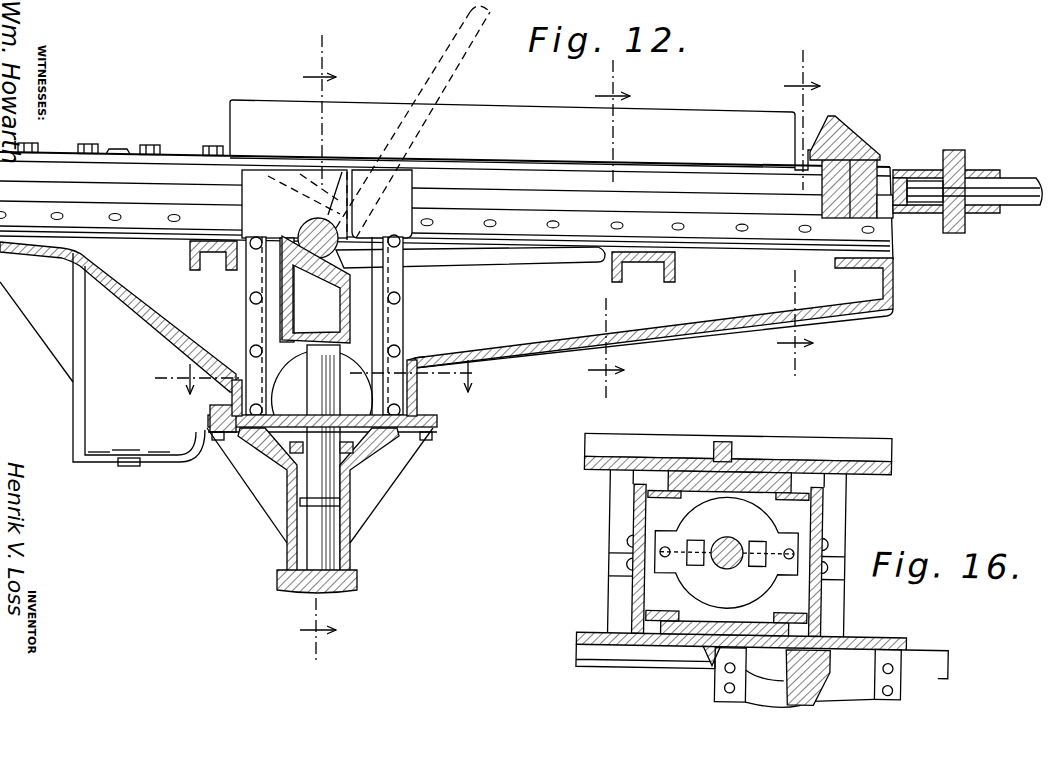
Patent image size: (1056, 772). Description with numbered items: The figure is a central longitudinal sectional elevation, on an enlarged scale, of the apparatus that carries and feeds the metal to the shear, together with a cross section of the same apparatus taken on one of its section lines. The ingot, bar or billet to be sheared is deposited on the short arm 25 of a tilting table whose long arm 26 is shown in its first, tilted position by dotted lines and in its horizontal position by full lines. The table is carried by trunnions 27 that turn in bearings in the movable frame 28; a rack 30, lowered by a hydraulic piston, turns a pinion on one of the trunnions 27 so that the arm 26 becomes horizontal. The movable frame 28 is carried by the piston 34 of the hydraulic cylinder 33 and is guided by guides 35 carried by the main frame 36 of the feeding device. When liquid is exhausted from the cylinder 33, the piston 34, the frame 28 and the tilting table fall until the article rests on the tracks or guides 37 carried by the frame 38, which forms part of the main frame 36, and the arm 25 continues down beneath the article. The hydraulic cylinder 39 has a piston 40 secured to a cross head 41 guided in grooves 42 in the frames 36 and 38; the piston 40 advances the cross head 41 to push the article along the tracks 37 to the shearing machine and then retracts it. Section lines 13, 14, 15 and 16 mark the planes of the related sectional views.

In FIG. 12, the section line 13— 13 is at (309, 348).
In FIG. 12, the section line 14— 14 is at (601, 230).
In FIG. 12, the section line 15— 15 is at (788, 215).
In FIG. 12, the section line 16— 16 is at (327, 372).
In FIG. 12, the short arm of the tilting table 25 is at (344, 202).
In FIG. 12, the long arm of the tilting table 26 is at (446, 71).
In FIG. 12, the trunnions 27 is at (277, 257).
In FIG. 12, the movable frame 28 is at (316, 289).
In FIG. 16, the movable frame 28 is at (752, 492).
In FIG. 16, the rack 30 is at (792, 691).
In FIG. 12, the hydraulic cylinder 33 is at (330, 544).
In FIG. 12, the piston 34 is at (313, 409).
In FIG. 16, the piston 34 is at (733, 541).
In FIG. 12, the guides 35 is at (250, 320).
In FIG. 16, the guides 35 is at (676, 499).
In FIG. 12, the main frame of the feeding device 36 is at (166, 325).
In FIG. 16, the main frame of the feeding device 36 is at (860, 475).
In FIG. 12, the tracks or guides 37 is at (147, 216).
In FIG. 12, the frame 38 is at (526, 135).
In FIG. 12, the hydraulic cylinder 39 is at (966, 177).
In FIG. 12, the piston 40 is at (981, 198).
In FIG. 12, the cross head 41 is at (880, 163).
In FIG. 12, the grooves 42 is at (716, 181).